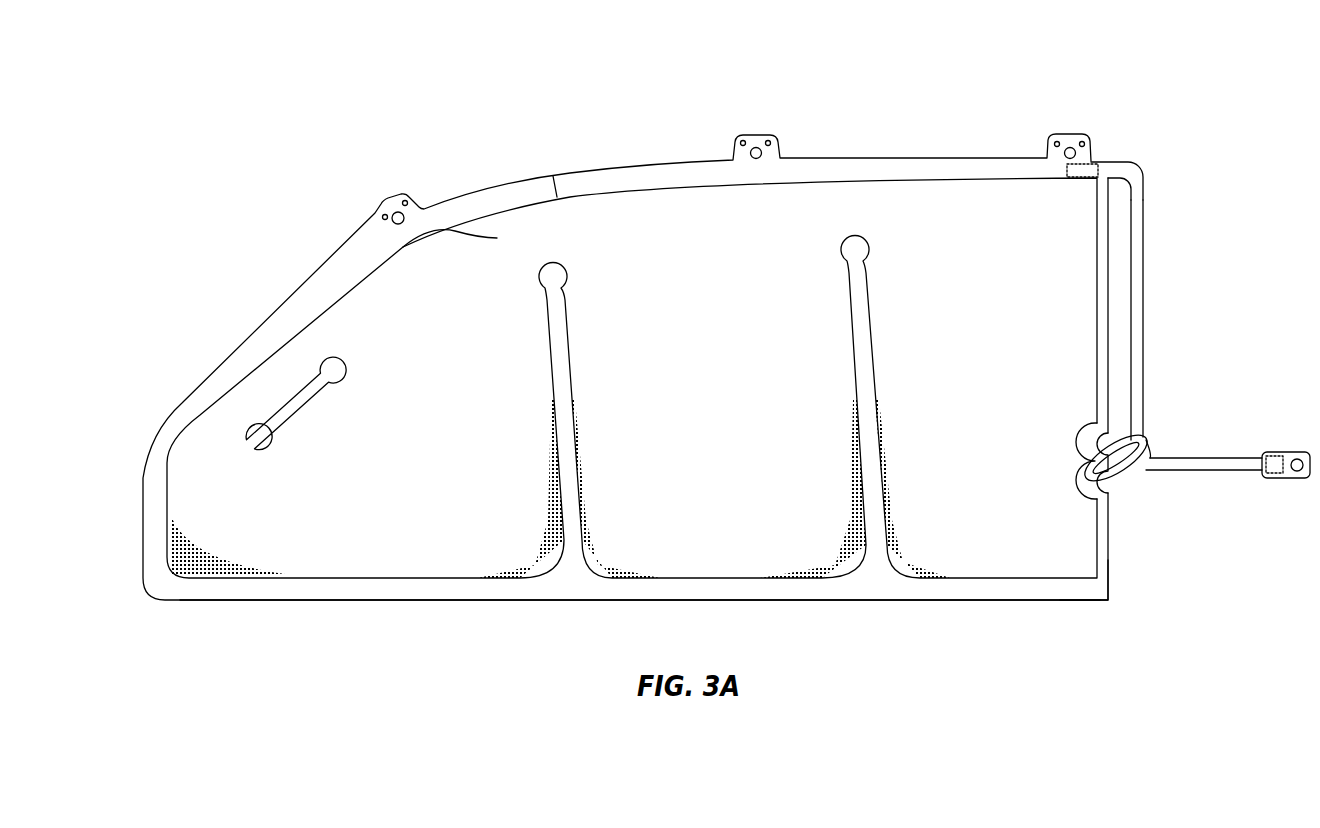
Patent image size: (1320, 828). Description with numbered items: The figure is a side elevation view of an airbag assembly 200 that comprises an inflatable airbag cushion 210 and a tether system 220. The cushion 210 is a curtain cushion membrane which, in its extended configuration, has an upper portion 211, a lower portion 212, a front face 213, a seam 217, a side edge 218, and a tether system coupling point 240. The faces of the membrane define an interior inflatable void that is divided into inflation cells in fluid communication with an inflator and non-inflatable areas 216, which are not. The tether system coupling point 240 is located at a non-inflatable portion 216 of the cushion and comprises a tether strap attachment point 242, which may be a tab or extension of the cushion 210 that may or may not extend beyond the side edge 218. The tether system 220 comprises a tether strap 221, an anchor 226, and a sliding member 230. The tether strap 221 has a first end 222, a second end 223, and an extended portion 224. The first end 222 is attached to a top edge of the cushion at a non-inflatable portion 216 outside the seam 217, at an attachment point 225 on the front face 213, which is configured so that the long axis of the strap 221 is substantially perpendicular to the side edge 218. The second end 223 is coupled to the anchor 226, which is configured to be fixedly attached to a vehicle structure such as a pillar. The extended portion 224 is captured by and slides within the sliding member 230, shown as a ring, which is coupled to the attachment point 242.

The airbag assembly 200 is at (325, 153).
The inflatable airbag cushion 210 is at (683, 214).
The upper portion 211 is at (403, 247).
The lower portion 212 is at (430, 560).
The front face 213 is at (632, 378).
The non-inflatable areas 216 is at (413, 197).
The seam 217 is at (553, 176).
The side edge 218 is at (1110, 582).
The tether system 220 is at (1194, 358).
The tether strap 221 is at (1152, 265).
The first end 222 is at (1123, 167).
The second end 223 is at (1193, 458).
The extended portion 224 is at (1140, 404).
The attachment point 225 is at (1088, 162).
The anchor 226 is at (1292, 480).
The sliding member 230 is at (1132, 473).
The tether system coupling point 240 is at (1128, 486).
The tether strap attachment point 242 is at (1093, 460).